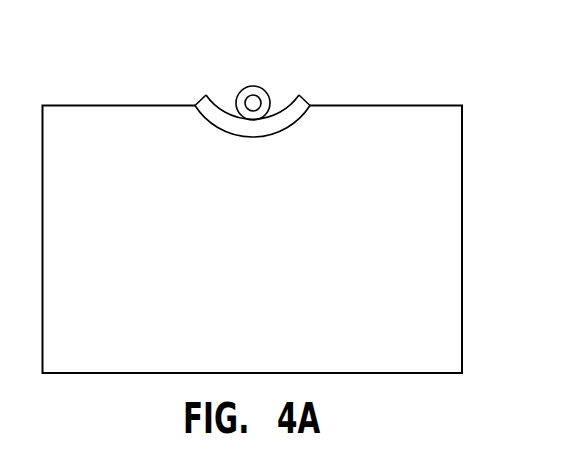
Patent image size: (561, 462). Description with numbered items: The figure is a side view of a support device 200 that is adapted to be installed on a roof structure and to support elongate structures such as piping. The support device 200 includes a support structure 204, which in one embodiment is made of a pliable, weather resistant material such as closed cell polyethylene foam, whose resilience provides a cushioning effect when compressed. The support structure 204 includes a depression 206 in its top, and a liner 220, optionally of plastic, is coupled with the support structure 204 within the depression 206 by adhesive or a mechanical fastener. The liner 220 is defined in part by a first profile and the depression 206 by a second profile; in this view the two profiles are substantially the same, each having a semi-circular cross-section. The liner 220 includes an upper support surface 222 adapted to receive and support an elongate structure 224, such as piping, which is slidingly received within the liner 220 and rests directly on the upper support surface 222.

The support device 200 is at (281, 192).
The support structure 204 is at (281, 240).
The depression 206 is at (252, 138).
The liner 220 is at (337, 91).
The upper support surface 222 is at (193, 83).
The elongate structure 224 is at (254, 81).